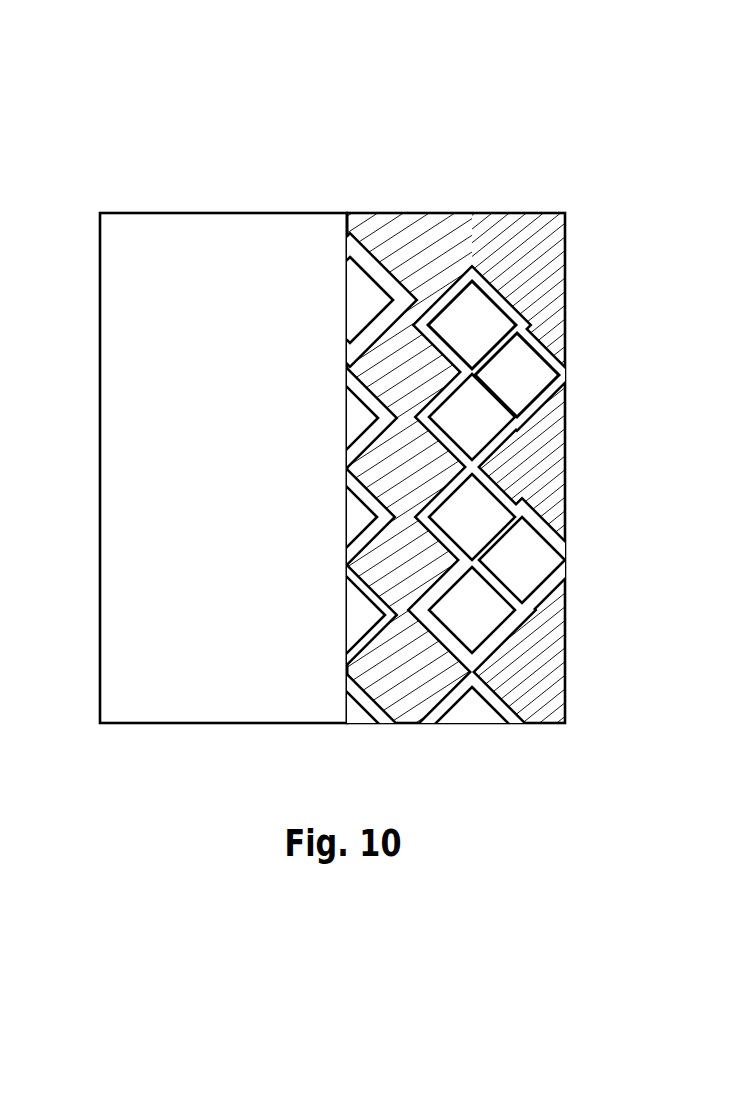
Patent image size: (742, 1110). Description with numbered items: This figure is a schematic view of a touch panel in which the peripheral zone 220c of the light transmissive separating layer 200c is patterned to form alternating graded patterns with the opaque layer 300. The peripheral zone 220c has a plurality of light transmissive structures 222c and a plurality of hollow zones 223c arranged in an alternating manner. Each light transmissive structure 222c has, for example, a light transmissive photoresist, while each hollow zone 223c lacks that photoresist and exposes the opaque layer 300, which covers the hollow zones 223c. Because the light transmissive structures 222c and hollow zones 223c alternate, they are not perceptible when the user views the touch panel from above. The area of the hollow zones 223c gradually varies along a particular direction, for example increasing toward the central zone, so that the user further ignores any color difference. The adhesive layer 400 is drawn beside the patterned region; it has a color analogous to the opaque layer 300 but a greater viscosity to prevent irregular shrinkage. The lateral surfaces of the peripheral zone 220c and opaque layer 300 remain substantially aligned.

The adhesive layer 400 is at (220, 705).
The light transmissive separating layer 200c is at (362, 295).
The peripheral zone 220c is at (332, 106).
The light transmissive structure 222c is at (355, 266).
The hollow zone 223c is at (426, 321).
The opaque layer 300 is at (450, 350).